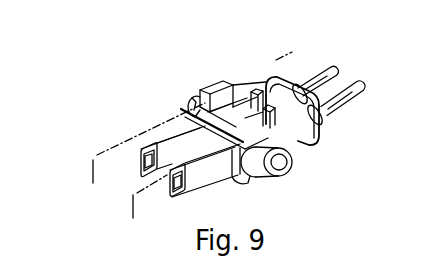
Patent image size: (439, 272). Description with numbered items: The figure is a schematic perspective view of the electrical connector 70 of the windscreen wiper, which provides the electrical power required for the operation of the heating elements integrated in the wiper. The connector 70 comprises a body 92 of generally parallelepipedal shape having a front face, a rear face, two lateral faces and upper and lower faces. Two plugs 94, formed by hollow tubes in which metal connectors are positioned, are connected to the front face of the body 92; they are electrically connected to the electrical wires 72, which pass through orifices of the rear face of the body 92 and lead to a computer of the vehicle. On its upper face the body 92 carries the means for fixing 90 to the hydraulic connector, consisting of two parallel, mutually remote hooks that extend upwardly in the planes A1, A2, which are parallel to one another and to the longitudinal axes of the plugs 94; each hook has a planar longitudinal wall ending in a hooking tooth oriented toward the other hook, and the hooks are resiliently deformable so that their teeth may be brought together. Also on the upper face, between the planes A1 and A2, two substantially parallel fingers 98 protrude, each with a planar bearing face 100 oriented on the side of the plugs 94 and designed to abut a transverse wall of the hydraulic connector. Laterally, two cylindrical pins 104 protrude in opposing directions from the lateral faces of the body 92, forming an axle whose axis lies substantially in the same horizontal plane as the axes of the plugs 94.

The electrical connector 70 is at (203, 79).
The electrical wires 72 is at (337, 72).
The means for fixing 90 is at (190, 105).
The body 92 is at (238, 80).
The plugs 94 is at (186, 165).
The fingers 98 is at (293, 80).
The bearing face 100 is at (277, 87).
The cylindrical pins 104 is at (186, 112).
The plane A1 is at (130, 208).
The plane A2 is at (90, 176).